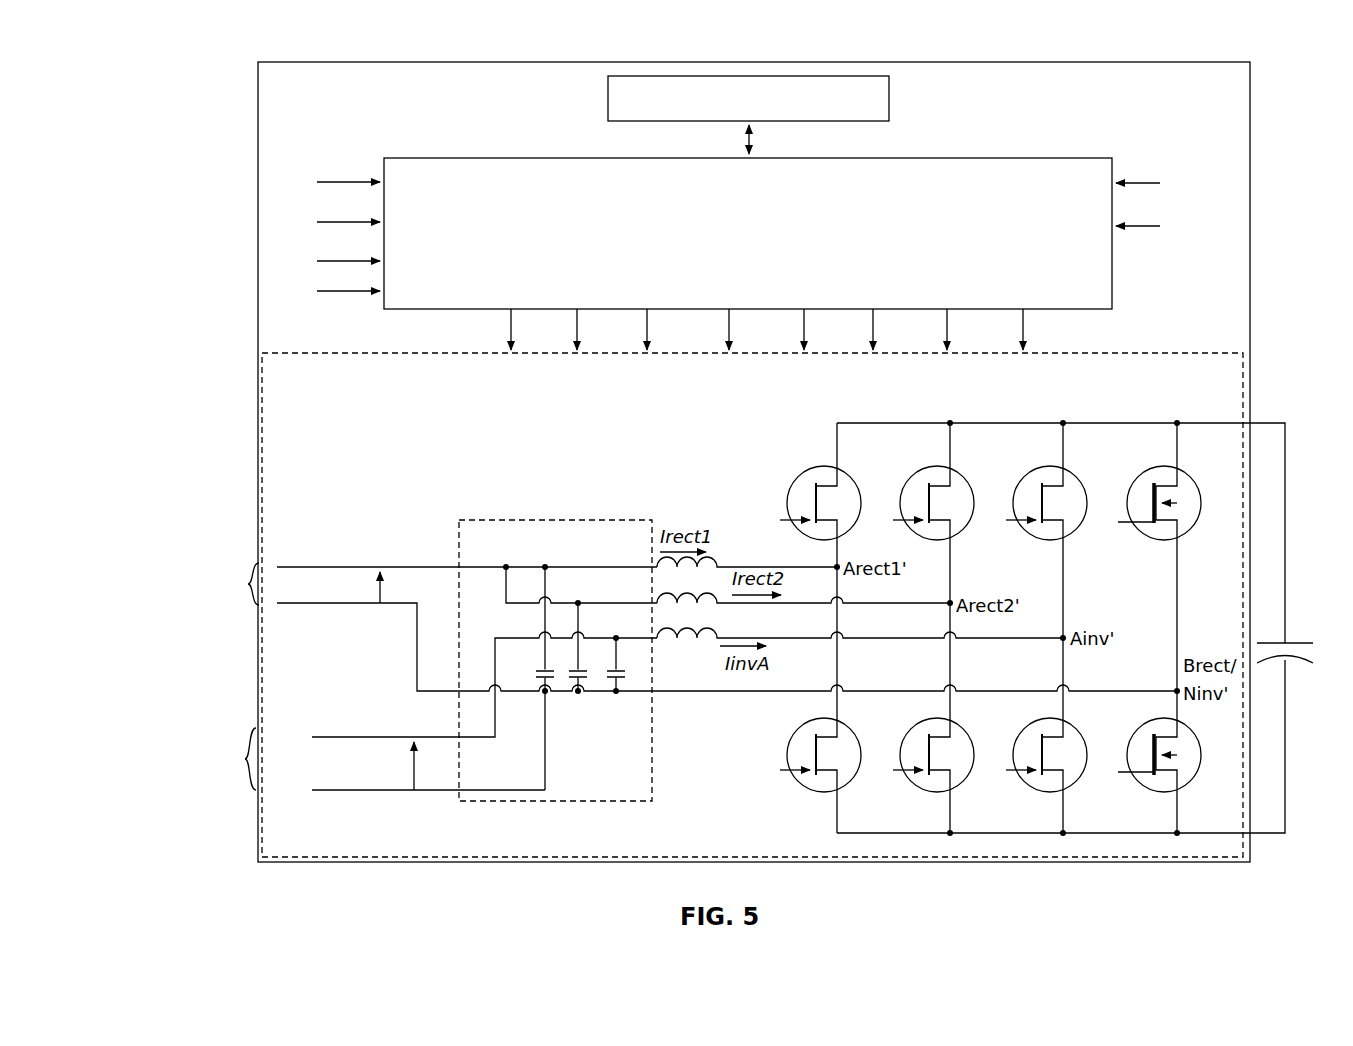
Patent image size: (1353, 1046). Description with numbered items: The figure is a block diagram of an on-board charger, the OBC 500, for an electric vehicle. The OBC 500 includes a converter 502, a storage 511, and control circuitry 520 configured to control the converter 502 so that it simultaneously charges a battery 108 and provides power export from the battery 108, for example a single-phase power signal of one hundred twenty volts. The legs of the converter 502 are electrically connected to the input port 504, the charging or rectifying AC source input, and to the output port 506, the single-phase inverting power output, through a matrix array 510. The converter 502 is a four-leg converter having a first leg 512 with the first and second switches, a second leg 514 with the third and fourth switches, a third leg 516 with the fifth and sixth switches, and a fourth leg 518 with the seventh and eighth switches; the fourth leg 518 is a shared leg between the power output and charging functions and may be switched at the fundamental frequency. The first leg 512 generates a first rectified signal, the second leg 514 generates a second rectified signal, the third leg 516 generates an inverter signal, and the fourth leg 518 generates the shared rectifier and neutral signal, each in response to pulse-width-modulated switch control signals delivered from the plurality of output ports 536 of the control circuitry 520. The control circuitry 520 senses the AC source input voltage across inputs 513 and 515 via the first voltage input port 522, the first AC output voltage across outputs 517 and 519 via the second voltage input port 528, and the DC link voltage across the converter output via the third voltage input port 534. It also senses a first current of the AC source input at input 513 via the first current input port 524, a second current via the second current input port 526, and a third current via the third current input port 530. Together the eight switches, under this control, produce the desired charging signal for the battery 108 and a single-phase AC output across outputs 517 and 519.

The OBC 500 is at (243, 40).
The converter 502 is at (335, 353).
The input port 504 is at (168, 612).
The output port 506 is at (165, 805).
The matrix array 510 is at (534, 514).
The storage 511 is at (606, 98).
The first leg 512 is at (831, 414).
The input 513 is at (322, 552).
The second leg 514 is at (945, 414).
The input 515 is at (325, 603).
The third leg 516 is at (1059, 414).
The output 517 is at (290, 718).
The fourth leg 518 is at (1173, 414).
The output 519 is at (283, 805).
The control circuitry 520 is at (455, 158).
The first voltage input port 522 is at (468, 192).
The first current input port 524 is at (452, 224).
The second current input port 526 is at (452, 258).
The second voltage input port 528 is at (472, 295).
The third current input port 530 is at (1055, 186).
The third voltage input port 534 is at (1055, 223).
The output ports 536 is at (612, 266).
The battery 108 is at (1301, 605).